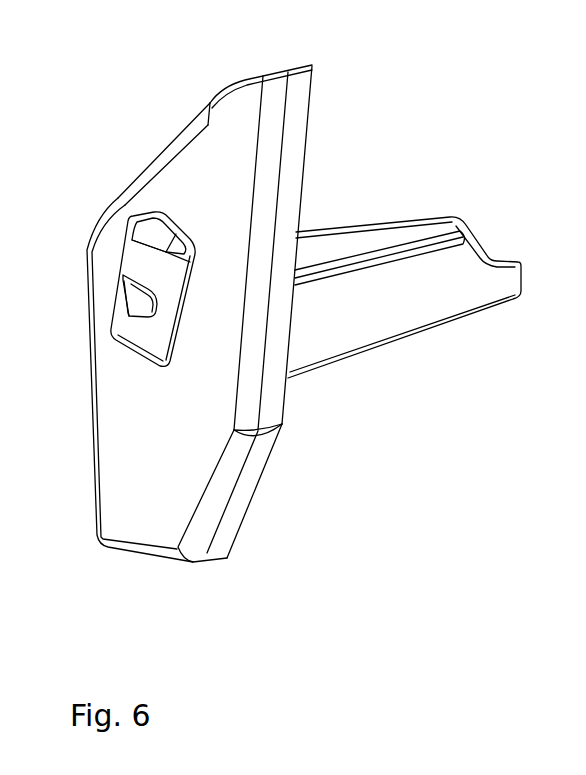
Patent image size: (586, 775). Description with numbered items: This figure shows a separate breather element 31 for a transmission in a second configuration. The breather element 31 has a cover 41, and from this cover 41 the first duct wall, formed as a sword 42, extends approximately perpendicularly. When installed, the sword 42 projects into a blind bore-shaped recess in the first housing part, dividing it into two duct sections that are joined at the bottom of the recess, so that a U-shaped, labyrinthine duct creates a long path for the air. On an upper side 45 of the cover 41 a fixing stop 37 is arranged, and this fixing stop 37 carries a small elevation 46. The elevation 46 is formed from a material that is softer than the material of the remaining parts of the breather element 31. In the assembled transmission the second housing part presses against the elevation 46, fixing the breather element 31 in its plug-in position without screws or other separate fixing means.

The breather element 31 is at (282, 322).
The fixing stop 37 is at (119, 231).
The cover 41 is at (160, 523).
The sword 42 is at (368, 336).
The upper side 45 is at (238, 115).
The elevation 46 is at (132, 297).